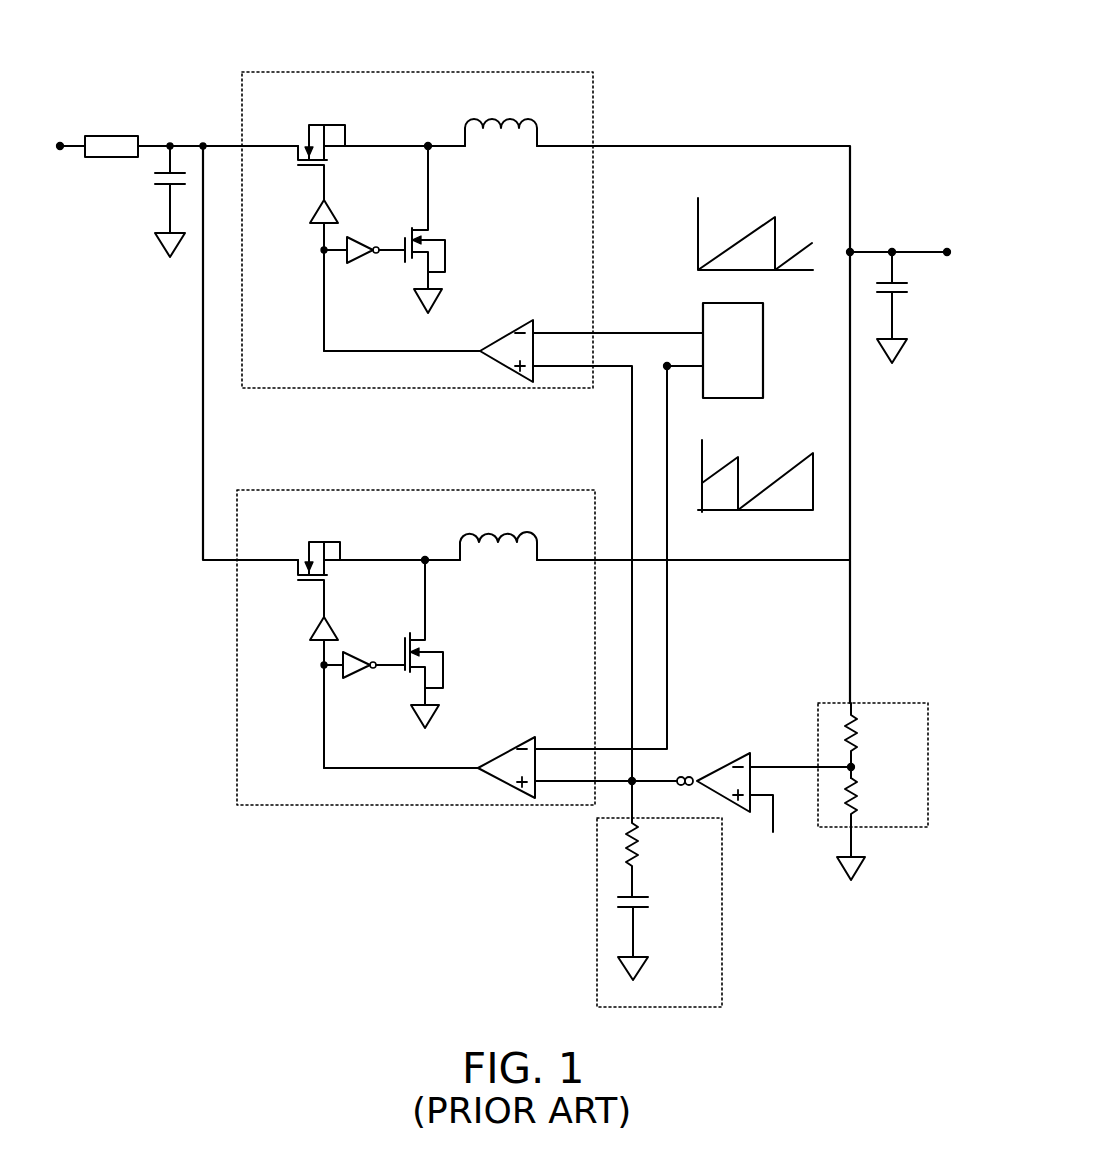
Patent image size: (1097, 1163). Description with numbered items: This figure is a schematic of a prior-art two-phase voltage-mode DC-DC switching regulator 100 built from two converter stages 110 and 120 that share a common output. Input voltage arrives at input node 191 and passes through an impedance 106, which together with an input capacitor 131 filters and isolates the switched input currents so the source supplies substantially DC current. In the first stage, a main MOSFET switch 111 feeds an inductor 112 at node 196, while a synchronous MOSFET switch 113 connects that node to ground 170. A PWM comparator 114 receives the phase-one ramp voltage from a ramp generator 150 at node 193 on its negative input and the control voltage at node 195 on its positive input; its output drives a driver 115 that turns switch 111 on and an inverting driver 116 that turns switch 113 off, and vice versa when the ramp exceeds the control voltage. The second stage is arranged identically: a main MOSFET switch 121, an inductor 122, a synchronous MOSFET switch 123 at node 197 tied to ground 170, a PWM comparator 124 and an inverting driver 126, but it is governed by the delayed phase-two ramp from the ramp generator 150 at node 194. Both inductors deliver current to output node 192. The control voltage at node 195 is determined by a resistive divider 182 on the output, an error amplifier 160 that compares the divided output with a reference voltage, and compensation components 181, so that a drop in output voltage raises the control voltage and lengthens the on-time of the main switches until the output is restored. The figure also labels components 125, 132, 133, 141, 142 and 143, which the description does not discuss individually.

The voltage-mode regulator 100 is at (806, 100).
The impedance 106 is at (108, 136).
The converter stage 110 is at (452, 72).
The main MOSFET switch 111 is at (323, 128).
The inductor 112 is at (485, 121).
The synchronous MOSFET switch 113 is at (418, 231).
The PWM comparator 114 is at (487, 338).
The driver 115 is at (312, 213).
The inverting driver 116 is at (362, 262).
The converter stage 120 is at (450, 490).
The main MOSFET switch 121 is at (322, 542).
The inductor 122 is at (478, 537).
The synchronous MOSFET switch 123 is at (418, 646).
The PWM comparator 124 is at (484, 758).
The second buffer 125 is at (312, 629).
The inverting driver 126 is at (360, 678).
The input capacitor 131 is at (156, 176).
The compensation capacitor 132 is at (648, 901).
The output capacitor 133 is at (907, 292).
The compensation resistor 141 is at (640, 831).
The upper feedback resistor 142 is at (860, 752).
The lower feedback resistor 143 is at (860, 812).
The ramp generator 150 is at (764, 327).
The error amplifier 160 is at (716, 768).
The ground 170 is at (162, 252).
The compensation components 181 is at (724, 928).
The resistive divider 182 is at (858, 703).
The input node 191 is at (62, 150).
The output node 192 is at (945, 250).
The node 193 is at (666, 331).
The node 194 is at (668, 369).
The node 195 is at (634, 783).
The node 196 is at (427, 145).
The node 197 is at (424, 559).